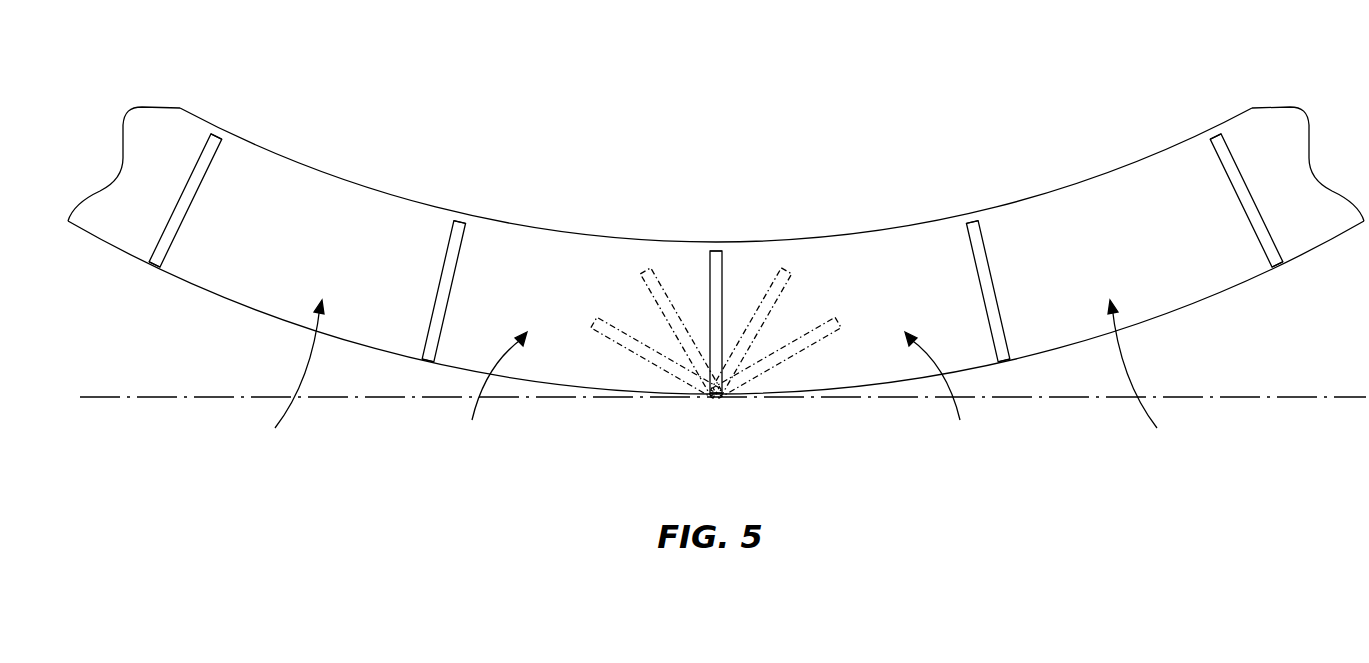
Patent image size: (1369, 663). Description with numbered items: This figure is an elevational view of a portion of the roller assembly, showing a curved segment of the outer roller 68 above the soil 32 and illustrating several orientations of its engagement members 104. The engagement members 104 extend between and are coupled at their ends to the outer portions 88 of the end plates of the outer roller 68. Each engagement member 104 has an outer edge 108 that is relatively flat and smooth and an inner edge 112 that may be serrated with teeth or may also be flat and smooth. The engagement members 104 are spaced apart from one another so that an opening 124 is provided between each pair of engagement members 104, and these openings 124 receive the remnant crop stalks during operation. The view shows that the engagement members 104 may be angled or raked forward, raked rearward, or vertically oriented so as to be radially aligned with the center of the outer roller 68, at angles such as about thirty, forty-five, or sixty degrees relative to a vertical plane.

The soil 32 is at (1247, 396).
The outer roller 68 is at (274, 148).
The outer portions 88 is at (1113, 198).
The engagement member 104 is at (208, 182).
The outer edge 108 is at (154, 268).
The inner edge 112 is at (223, 135).
The opening 124 is at (719, 380).